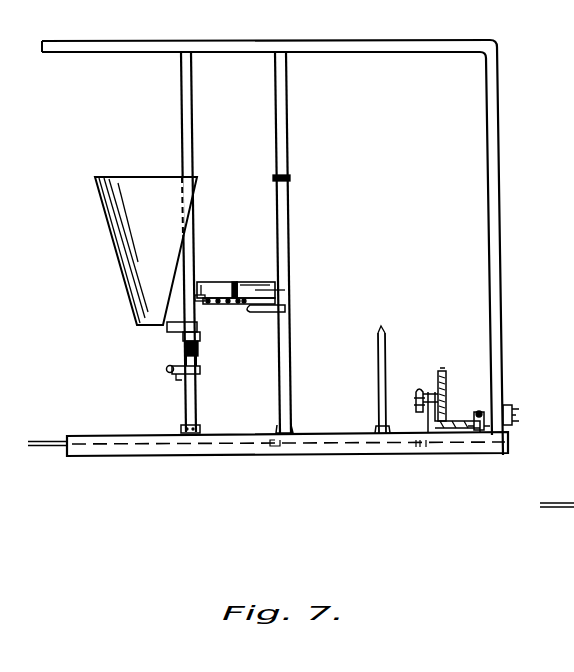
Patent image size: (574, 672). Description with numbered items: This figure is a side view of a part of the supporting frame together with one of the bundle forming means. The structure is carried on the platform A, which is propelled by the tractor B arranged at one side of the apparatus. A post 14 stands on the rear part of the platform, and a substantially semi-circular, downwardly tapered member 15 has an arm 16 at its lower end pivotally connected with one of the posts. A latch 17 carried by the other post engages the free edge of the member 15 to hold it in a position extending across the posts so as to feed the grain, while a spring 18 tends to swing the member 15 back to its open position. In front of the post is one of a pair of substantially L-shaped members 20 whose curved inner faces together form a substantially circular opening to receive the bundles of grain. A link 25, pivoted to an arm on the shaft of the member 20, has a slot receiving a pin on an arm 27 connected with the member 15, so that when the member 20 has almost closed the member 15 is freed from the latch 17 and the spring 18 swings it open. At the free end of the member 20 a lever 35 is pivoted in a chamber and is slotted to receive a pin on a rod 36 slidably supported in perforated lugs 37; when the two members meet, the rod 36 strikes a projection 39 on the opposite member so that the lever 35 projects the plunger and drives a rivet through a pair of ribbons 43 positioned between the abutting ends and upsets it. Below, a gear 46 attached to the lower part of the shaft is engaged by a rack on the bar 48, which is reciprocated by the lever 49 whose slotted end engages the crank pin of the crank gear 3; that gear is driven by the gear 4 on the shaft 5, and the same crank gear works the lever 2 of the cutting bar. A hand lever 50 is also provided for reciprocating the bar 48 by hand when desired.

The lever 2 is at (492, 415).
The crank gear 3 is at (445, 421).
The gear 4 is at (443, 371).
The shaft 5 is at (419, 390).
The post 14 is at (188, 405).
The semi-circular member 15 is at (118, 190).
The arm 16 is at (165, 330).
The latch 17 is at (287, 178).
The spring 18 is at (198, 352).
The L-shaped member 20 is at (250, 285).
The link 25 is at (175, 370).
The arm 27 is at (197, 378).
The lever 35 is at (196, 298).
The rod 36 is at (232, 305).
The perforated lug 37 is at (215, 305).
The projection 39 is at (285, 309).
The ribbon 43 is at (256, 291).
The gear 46 is at (182, 450).
The rack bar 48 is at (47, 448).
The lever 49 is at (482, 430).
The hand lever 50 is at (382, 328).
The platform A is at (323, 433).
The tractor B is at (525, 407).